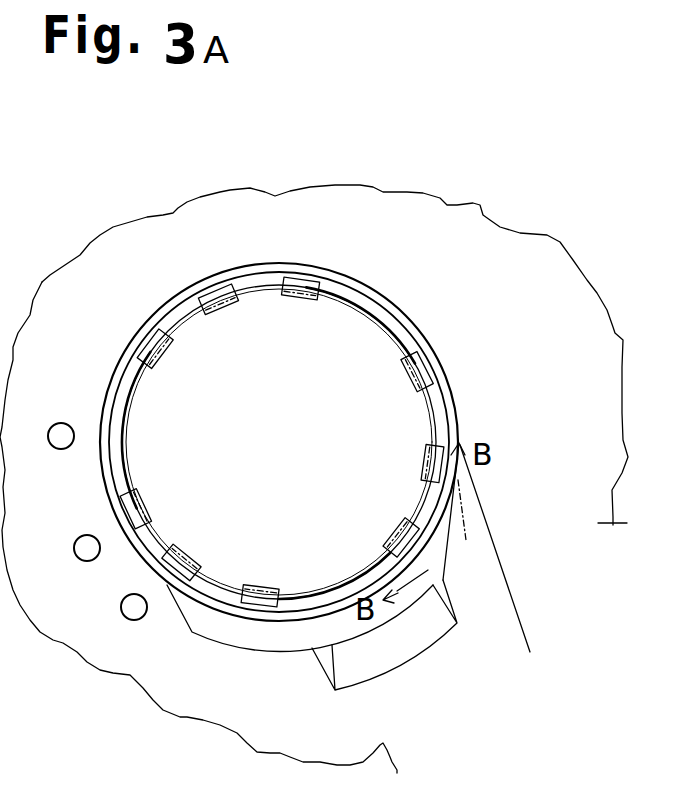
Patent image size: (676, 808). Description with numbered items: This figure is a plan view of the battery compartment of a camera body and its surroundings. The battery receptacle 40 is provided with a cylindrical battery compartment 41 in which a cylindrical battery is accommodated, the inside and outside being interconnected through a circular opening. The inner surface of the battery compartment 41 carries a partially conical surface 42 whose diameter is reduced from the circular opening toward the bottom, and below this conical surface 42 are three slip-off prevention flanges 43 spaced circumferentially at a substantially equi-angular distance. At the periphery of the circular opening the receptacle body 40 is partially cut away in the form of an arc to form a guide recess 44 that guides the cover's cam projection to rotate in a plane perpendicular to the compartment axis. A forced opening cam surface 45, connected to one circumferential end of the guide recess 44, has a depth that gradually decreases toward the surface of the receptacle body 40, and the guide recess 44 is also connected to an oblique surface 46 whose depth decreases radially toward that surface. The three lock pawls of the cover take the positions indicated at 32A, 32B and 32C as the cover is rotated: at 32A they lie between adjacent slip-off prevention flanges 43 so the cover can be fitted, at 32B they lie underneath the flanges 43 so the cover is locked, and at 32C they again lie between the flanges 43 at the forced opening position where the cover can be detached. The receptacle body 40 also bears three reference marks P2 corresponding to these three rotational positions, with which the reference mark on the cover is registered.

The battery receptacle 40 is at (348, 203).
The battery compartment 41 is at (412, 426).
The conical surface 42 is at (118, 381).
The slip-off prevention flanges 43 is at (400, 327).
The guide recess 44 is at (236, 630).
The forced opening cam surface 45 is at (470, 494).
The oblique surface 46 is at (358, 668).
The lock pawl position 32A is at (208, 292).
The lock pawl position 32B is at (303, 279).
The lock pawl position 32C is at (147, 347).
The reference marks P2 is at (49, 440).